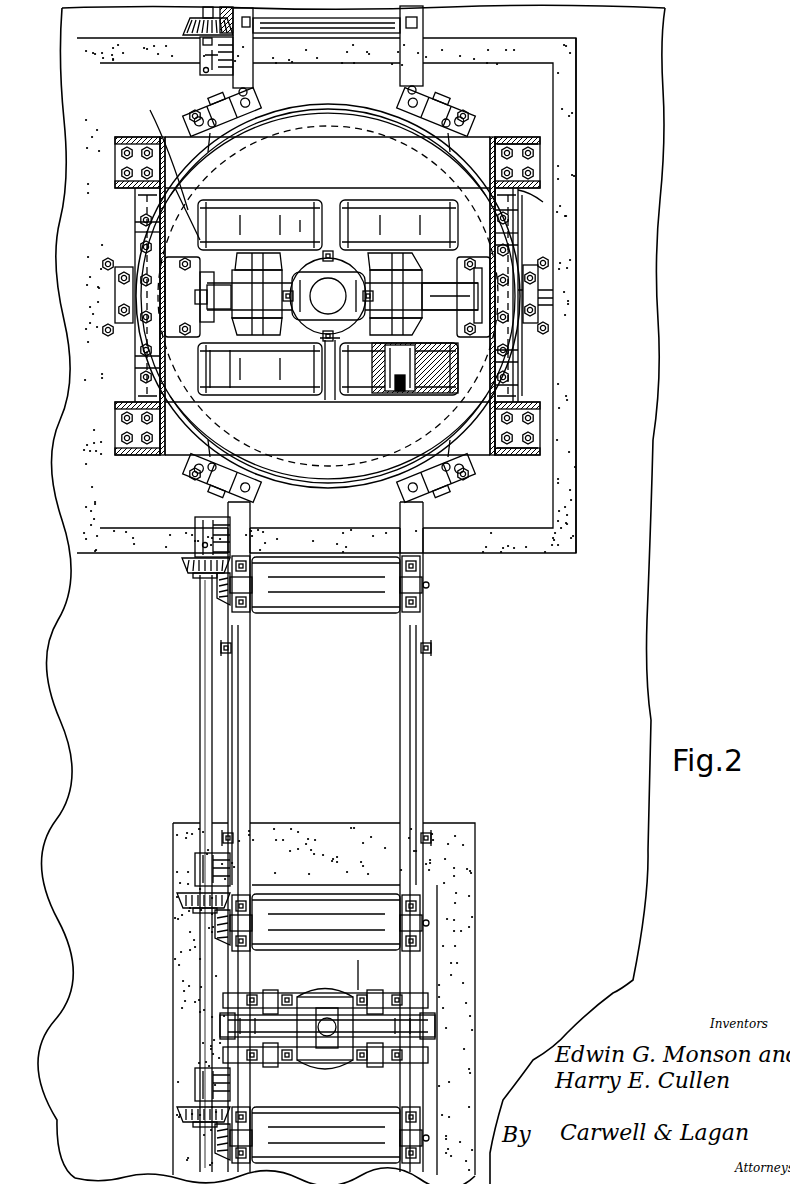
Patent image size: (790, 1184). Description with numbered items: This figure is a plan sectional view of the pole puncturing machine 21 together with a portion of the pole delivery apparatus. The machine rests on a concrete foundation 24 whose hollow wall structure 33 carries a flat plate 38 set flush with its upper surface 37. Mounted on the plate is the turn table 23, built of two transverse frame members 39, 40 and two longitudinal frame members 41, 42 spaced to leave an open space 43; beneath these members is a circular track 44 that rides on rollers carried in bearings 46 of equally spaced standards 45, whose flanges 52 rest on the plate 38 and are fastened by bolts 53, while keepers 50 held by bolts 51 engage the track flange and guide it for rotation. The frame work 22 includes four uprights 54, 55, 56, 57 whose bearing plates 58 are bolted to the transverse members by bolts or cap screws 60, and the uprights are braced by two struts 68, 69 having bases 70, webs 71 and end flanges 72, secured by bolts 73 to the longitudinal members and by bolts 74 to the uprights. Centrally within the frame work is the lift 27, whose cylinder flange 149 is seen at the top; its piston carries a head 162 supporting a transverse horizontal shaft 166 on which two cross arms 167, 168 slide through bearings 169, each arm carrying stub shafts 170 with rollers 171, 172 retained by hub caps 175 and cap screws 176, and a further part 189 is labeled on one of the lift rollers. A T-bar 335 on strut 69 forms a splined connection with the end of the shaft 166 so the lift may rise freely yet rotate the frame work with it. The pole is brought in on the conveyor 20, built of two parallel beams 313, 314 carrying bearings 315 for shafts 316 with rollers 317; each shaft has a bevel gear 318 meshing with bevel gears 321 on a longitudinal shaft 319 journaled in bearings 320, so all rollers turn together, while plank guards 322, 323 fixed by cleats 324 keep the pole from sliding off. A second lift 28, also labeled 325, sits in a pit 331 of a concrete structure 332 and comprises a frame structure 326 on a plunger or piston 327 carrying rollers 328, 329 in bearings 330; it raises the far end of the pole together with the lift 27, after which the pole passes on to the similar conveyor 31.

The conveyor 20 is at (410, 790).
The pole puncturing machine 21 is at (537, 145).
The frame work 22 is at (540, 455).
The turn table 23 is at (300, 490).
The foundation 24 is at (565, 510).
The lift 27 is at (325, 205).
The second lift 28 is at (315, 1025).
The conveyor 31 is at (425, 35).
The hollow wall structure 33 is at (533, 298).
The upper surface 37 is at (565, 538).
The flat plate 38 is at (540, 100).
The transverse frame member 39 is at (332, 145).
The transverse frame member 40 is at (332, 455).
The longitudinal frame member 41 is at (138, 196).
The longitudinal frame member 42 is at (520, 197).
The open space 43 is at (170, 162).
The circular track 44 is at (297, 107).
The standard 45 is at (105, 276).
The bearing 46 is at (170, 268).
The keeper 50 is at (205, 60).
The bolt 51 is at (208, 152).
The flange 52 is at (246, 112).
The bolt 53 is at (195, 110).
The upright 54 is at (130, 456).
The upright 55 is at (525, 456).
The upright 56 is at (138, 137).
The upright 57 is at (522, 138).
The bearing plate 58 is at (121, 152).
The bolt or cap screw 60 is at (121, 173).
The strut 68 is at (158, 231).
The strut 69 is at (520, 233).
The base 70 is at (140, 368).
The web 71 is at (158, 355).
The end flange 72 is at (528, 210).
The bolt 73 is at (143, 222).
The bolt 74 is at (140, 192).
The flange 149 is at (335, 222).
The head 162 is at (332, 400).
The transverse horizontal shaft 166 is at (428, 233).
The cross arm 167 is at (242, 320).
The cross arm 168 is at (412, 325).
The bearing 169 is at (243, 280).
The stub shaft 170 is at (402, 360).
The roller 171 is at (247, 222).
The roller 172 is at (395, 210).
The hub cap 175 is at (405, 395).
The cap screw 176 is at (398, 395).
The roller shaft 189 is at (200, 330).
The beam 313 is at (240, 745).
The beam 314 is at (424, 712).
The bearing 315 is at (248, 590).
The shaft 316 is at (430, 586).
The roller 317 is at (340, 598).
The bevel gear 318 is at (220, 592).
The longitudinally extending shaft 319 is at (198, 760).
The bearing 320 is at (197, 530).
The bevel gear 321 is at (188, 568).
The guard 322 is at (250, 773).
The guard 323 is at (400, 738).
The cleat 324 is at (220, 650).
The second lift 325 is at (430, 972).
The frame structure 326 is at (310, 998).
The plunger or piston 327 is at (340, 998).
The roller 328 is at (230, 1026).
The roller 329 is at (432, 1030).
The bearing 330 is at (226, 1000).
The pit 331 is at (358, 960).
The concrete structure 332 is at (470, 868).
The T-bar 335 is at (525, 290).